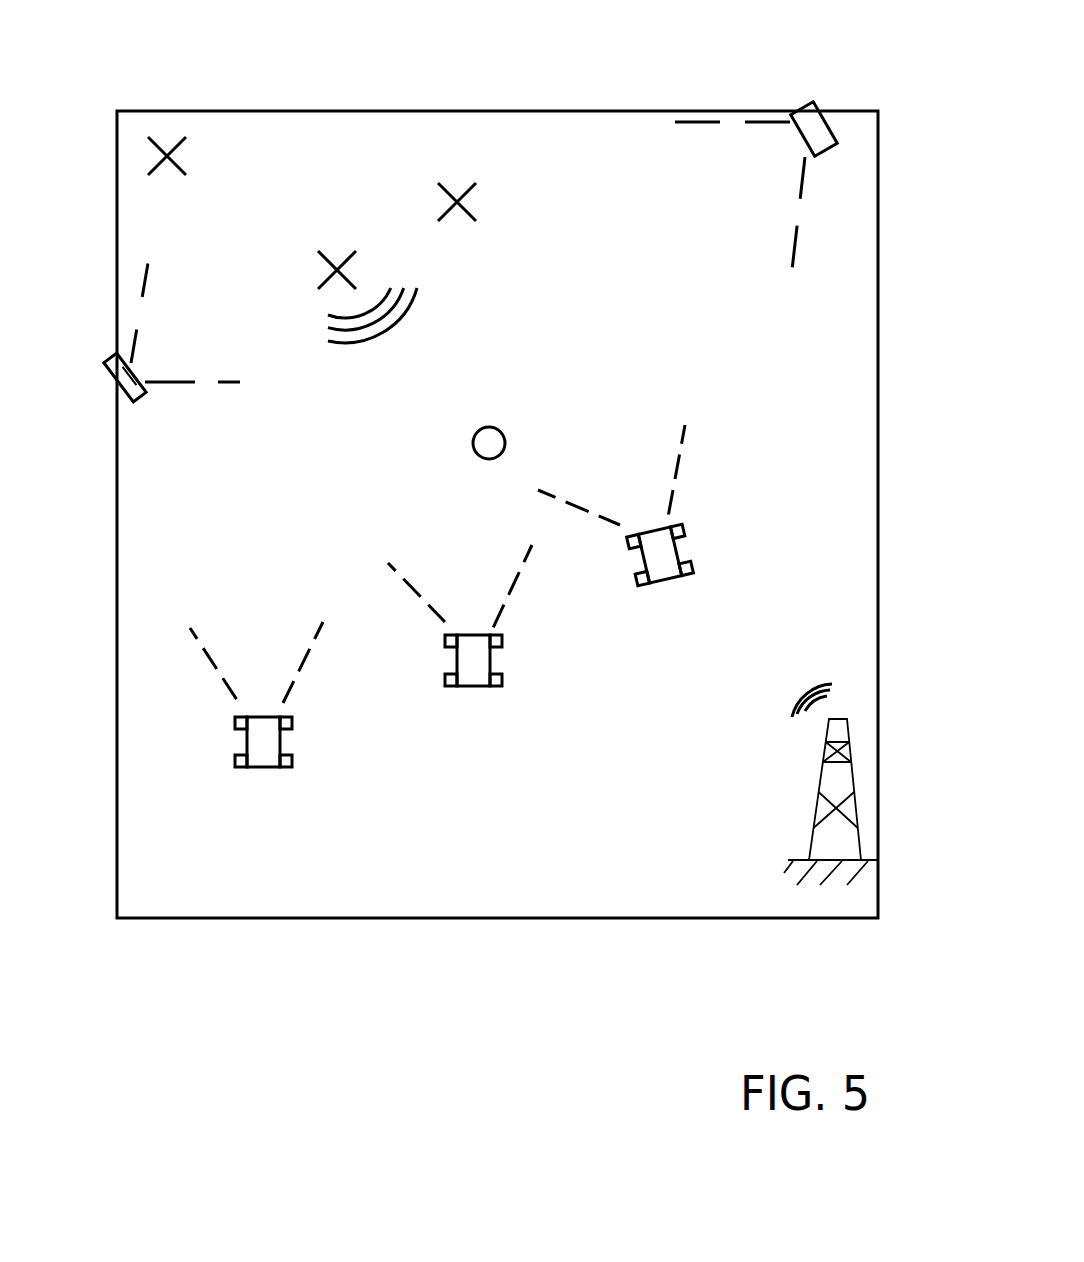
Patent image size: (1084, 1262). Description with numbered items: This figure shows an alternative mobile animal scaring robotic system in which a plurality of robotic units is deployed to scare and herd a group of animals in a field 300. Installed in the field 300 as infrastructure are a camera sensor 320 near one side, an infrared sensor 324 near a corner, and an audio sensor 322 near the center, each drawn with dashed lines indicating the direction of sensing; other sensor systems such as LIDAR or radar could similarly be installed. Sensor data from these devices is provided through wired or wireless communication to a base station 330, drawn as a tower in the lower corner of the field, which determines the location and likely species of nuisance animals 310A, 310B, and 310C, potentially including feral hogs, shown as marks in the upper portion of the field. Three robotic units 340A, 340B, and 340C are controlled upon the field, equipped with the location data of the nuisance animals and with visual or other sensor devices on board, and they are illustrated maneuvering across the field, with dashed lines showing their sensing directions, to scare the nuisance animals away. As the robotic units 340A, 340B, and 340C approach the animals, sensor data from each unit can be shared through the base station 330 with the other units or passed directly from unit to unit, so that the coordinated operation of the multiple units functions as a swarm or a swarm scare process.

The field 300 is at (158, 757).
The nuisance animal 310A is at (172, 135).
The nuisance animal 310B is at (343, 240).
The nuisance animal 310C is at (456, 183).
The camera sensor 320 is at (102, 393).
The audio sensor 322 is at (522, 435).
The infrared sensor 324 is at (830, 100).
The base station 330 is at (852, 764).
The robotic unit 340A is at (262, 787).
The robotic unit 340B is at (481, 708).
The robotic unit 340C is at (676, 597).